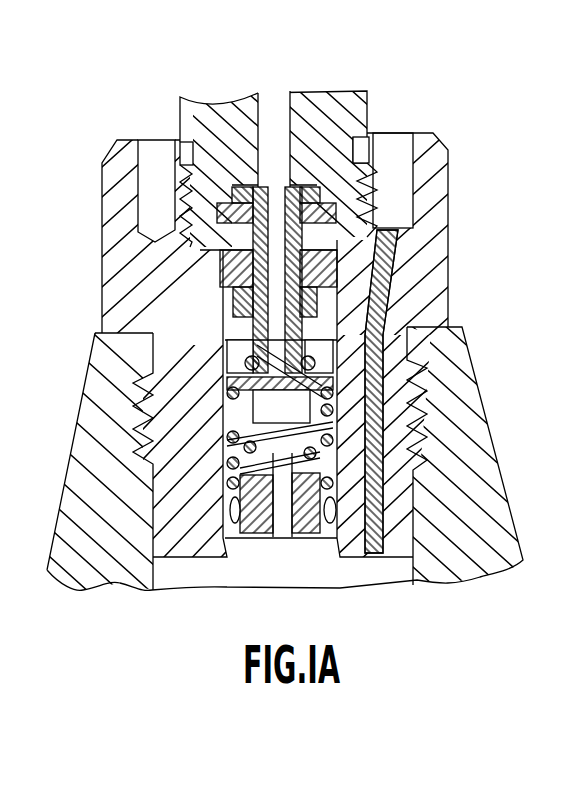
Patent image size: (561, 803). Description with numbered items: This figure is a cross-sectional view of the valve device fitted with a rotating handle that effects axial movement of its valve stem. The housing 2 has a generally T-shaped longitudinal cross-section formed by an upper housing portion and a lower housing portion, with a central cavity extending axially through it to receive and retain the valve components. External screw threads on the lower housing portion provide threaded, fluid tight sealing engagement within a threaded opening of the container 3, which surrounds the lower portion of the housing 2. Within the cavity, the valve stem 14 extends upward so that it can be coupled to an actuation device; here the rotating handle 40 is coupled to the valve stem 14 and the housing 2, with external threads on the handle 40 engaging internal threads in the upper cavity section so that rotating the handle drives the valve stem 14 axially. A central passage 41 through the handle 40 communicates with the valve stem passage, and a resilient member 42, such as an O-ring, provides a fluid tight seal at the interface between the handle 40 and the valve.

The housing 2 is at (447, 183).
The container 3 is at (467, 451).
The valve stem 14 is at (317, 287).
The rotating handle 40 is at (350, 107).
The central passage 41 is at (277, 106).
The resilient member 42 is at (237, 185).